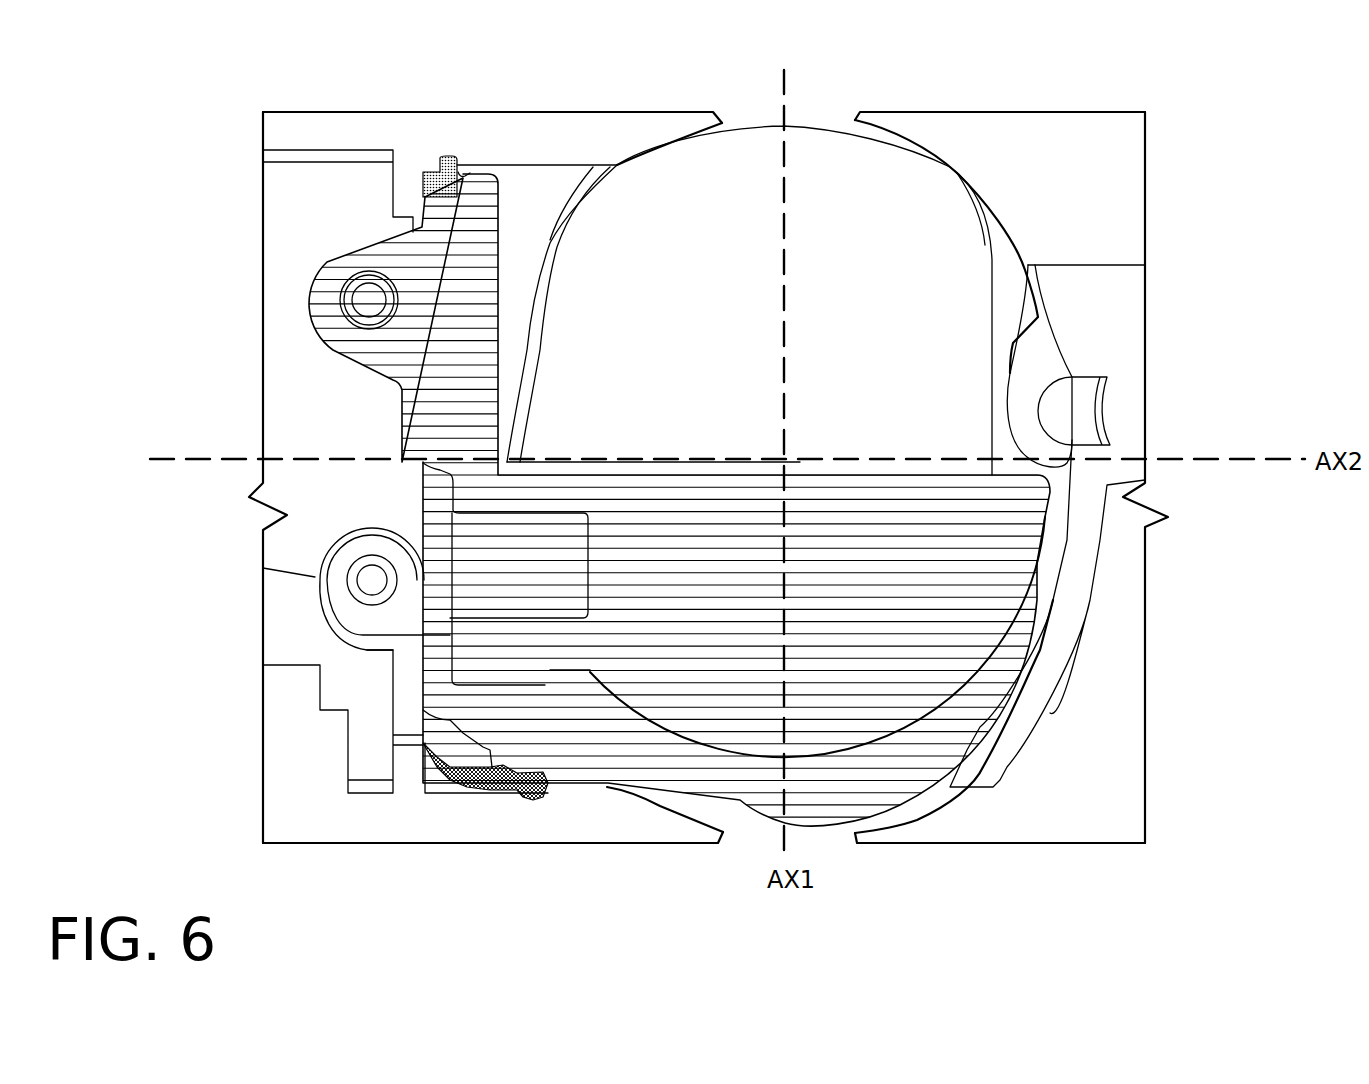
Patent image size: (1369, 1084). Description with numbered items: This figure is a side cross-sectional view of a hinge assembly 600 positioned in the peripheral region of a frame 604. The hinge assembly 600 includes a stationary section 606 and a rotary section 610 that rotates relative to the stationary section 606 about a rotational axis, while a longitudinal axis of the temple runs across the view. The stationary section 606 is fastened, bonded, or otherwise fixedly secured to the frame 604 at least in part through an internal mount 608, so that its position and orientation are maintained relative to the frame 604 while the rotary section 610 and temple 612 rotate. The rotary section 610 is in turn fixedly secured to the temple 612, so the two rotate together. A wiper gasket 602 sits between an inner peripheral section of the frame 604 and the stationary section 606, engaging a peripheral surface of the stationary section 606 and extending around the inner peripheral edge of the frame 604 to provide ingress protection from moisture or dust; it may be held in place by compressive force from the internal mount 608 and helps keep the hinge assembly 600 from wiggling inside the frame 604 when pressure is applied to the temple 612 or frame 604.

The hinge assembly 600 is at (167, 115).
The wiper gasket 602 is at (450, 156).
The frame 604 is at (645, 122).
The stationary section 606 is at (340, 256).
The internal mount 608 is at (370, 297).
The rotary section 610 is at (845, 165).
The temple 612 is at (960, 135).